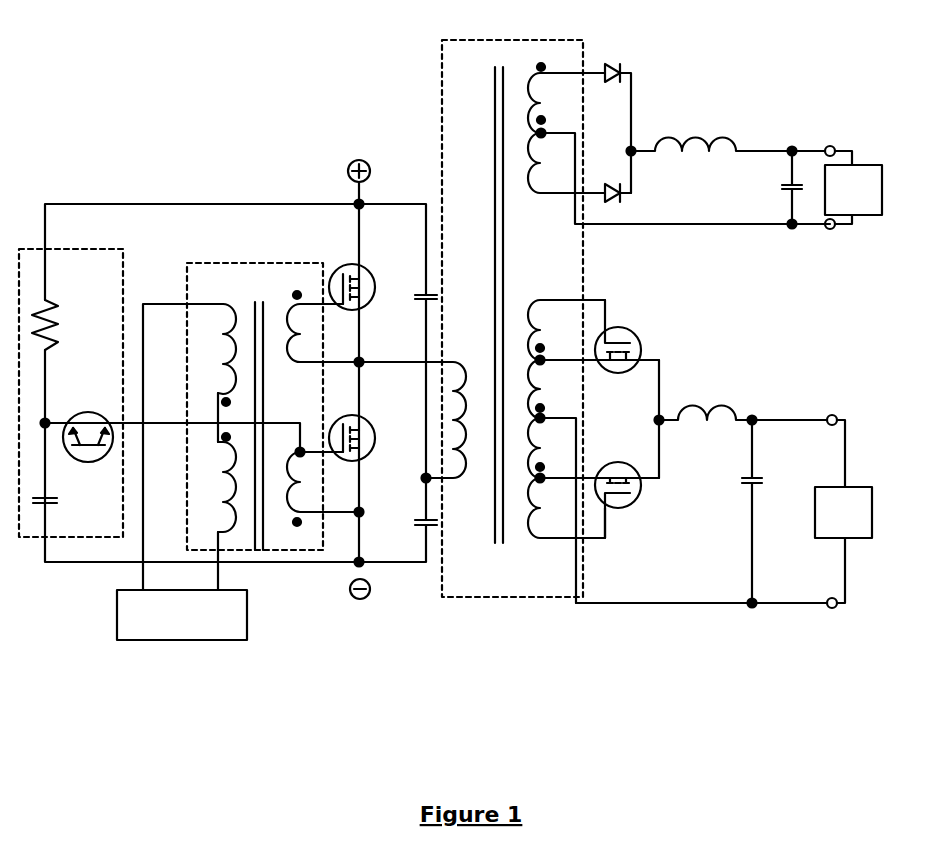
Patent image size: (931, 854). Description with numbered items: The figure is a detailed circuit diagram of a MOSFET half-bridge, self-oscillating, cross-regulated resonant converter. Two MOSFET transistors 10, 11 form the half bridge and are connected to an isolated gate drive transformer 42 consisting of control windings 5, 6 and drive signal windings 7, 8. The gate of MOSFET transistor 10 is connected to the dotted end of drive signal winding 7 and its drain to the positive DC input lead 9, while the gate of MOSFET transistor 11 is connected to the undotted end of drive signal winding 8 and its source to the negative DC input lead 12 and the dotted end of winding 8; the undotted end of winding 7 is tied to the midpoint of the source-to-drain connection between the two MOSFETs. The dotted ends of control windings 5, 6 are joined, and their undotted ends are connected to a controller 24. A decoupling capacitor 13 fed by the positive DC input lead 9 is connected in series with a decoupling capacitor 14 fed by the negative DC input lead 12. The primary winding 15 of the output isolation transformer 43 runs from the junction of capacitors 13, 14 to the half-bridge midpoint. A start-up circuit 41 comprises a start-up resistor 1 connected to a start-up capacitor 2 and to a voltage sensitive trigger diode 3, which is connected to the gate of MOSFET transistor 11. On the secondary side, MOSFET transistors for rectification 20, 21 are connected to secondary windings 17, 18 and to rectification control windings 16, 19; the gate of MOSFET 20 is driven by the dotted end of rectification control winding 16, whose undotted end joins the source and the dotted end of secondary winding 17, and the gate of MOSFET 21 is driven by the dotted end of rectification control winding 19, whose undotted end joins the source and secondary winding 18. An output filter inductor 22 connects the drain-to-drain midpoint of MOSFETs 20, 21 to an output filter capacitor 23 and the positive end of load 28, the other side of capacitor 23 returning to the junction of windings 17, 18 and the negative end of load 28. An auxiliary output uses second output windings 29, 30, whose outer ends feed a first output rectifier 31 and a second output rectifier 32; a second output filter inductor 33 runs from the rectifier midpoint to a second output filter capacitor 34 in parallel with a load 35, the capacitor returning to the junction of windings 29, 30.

The start-up resistor 1 is at (48, 300).
The start-up capacitor 2 is at (39, 498).
The voltage sensitive trigger diode 3 is at (100, 413).
The control winding 5 is at (225, 326).
The control winding 6 is at (223, 511).
The drive signal winding 7 is at (291, 356).
The drive signal winding 8 is at (284, 481).
The positive DC input lead 9 is at (366, 162).
The MOSFET transistor 10 is at (370, 274).
The MOSFET transistor 11 is at (371, 432).
The negative DC input lead 12 is at (349, 590).
The decoupling capacitor 13 is at (418, 300).
The decoupling capacitor 14 is at (418, 527).
The primary winding 15 is at (458, 480).
The rectification control winding 16 is at (538, 300).
The secondary winding 17 is at (534, 376).
The secondary winding 18 is at (534, 433).
The rectification control winding 19 is at (532, 541).
The MOSFET transistor for rectification 20 is at (636, 332).
The MOSFET transistor for rectification 21 is at (642, 503).
The output filter inductor 22 is at (724, 395).
The output filter capacitor 23 is at (747, 483).
The controller 24 is at (248, 620).
The load 28 is at (815, 523).
The second output winding 29 is at (535, 72).
The second output winding 30 is at (535, 194).
The first output rectifier 31 is at (611, 64).
The second output rectifier 32 is at (612, 202).
The second output filter inductor 33 is at (706, 127).
The second output filter capacitor 34 is at (781, 190).
The load 35 is at (860, 215).
The start-up circuit 41 is at (80, 247).
The isolated gate drive transformer 42 is at (248, 263).
The output isolation transformer 43 is at (488, 40).